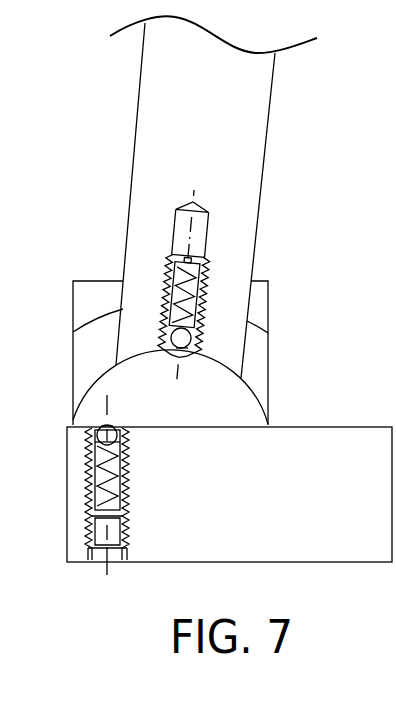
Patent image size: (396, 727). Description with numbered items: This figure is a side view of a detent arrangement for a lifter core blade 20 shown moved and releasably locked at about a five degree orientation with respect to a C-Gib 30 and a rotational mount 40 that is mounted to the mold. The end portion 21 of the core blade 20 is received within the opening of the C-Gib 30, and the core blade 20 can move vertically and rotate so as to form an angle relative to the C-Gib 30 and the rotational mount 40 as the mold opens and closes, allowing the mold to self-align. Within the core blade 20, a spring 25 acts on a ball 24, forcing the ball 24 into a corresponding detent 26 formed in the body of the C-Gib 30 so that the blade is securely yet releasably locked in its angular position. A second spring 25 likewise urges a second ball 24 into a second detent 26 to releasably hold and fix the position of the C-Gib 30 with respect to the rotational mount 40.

The core blade 20 is at (257, 108).
The end portion 21 is at (238, 237).
The ball 24 is at (185, 343).
The spring 25 is at (168, 287).
The detent 26 is at (186, 351).
The C-Gib 30 is at (258, 303).
The rotational mount 40 is at (345, 543).